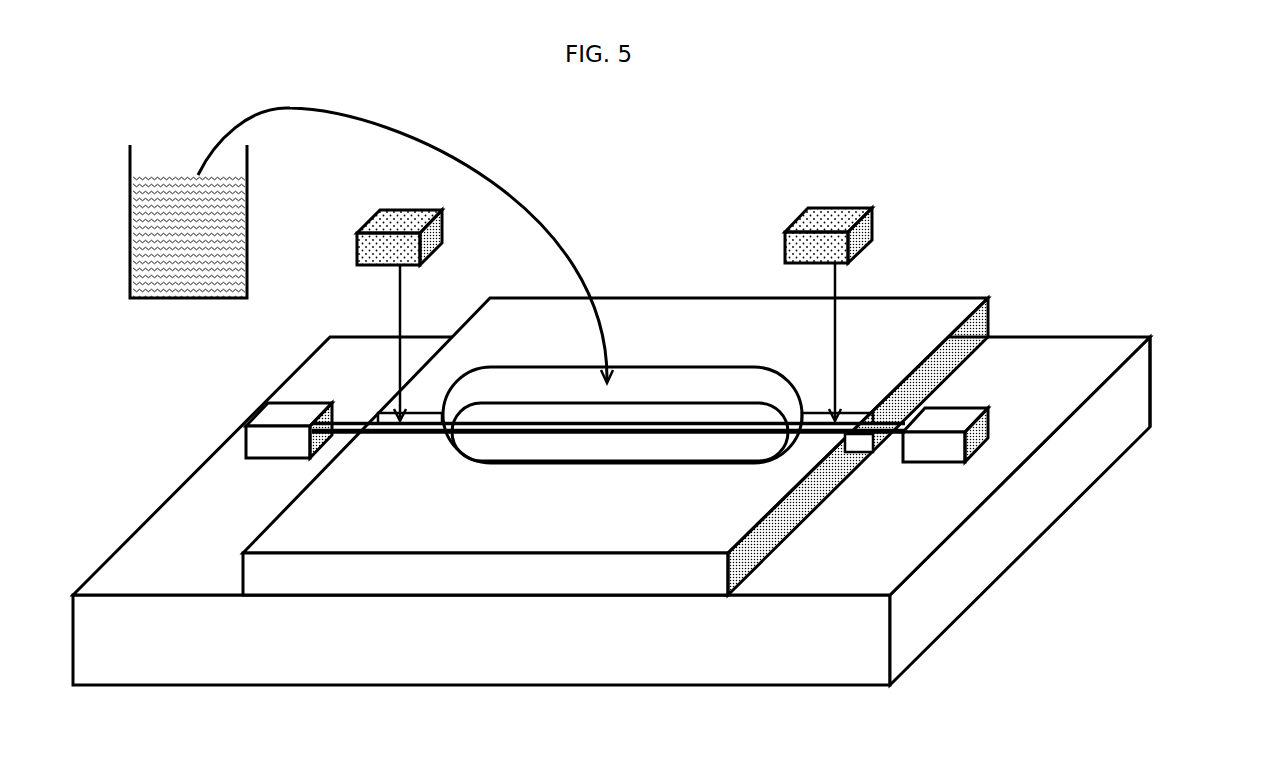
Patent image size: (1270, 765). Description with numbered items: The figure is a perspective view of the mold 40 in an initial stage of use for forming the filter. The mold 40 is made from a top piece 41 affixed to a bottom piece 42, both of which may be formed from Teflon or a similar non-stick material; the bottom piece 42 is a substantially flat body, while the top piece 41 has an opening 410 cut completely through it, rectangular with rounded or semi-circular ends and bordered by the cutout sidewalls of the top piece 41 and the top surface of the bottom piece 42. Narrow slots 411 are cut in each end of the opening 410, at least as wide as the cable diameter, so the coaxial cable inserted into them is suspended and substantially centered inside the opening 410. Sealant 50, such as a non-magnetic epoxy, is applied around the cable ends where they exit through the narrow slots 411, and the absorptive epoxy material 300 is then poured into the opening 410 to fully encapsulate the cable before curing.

The absorptive epoxy material 300 is at (208, 236).
The sealant 50 is at (370, 225).
The opening 410 is at (708, 385).
The top piece 41 is at (968, 297).
The mold 40 is at (1048, 333).
The bottom piece 42 is at (1150, 358).
The narrow slots 411 is at (372, 443).